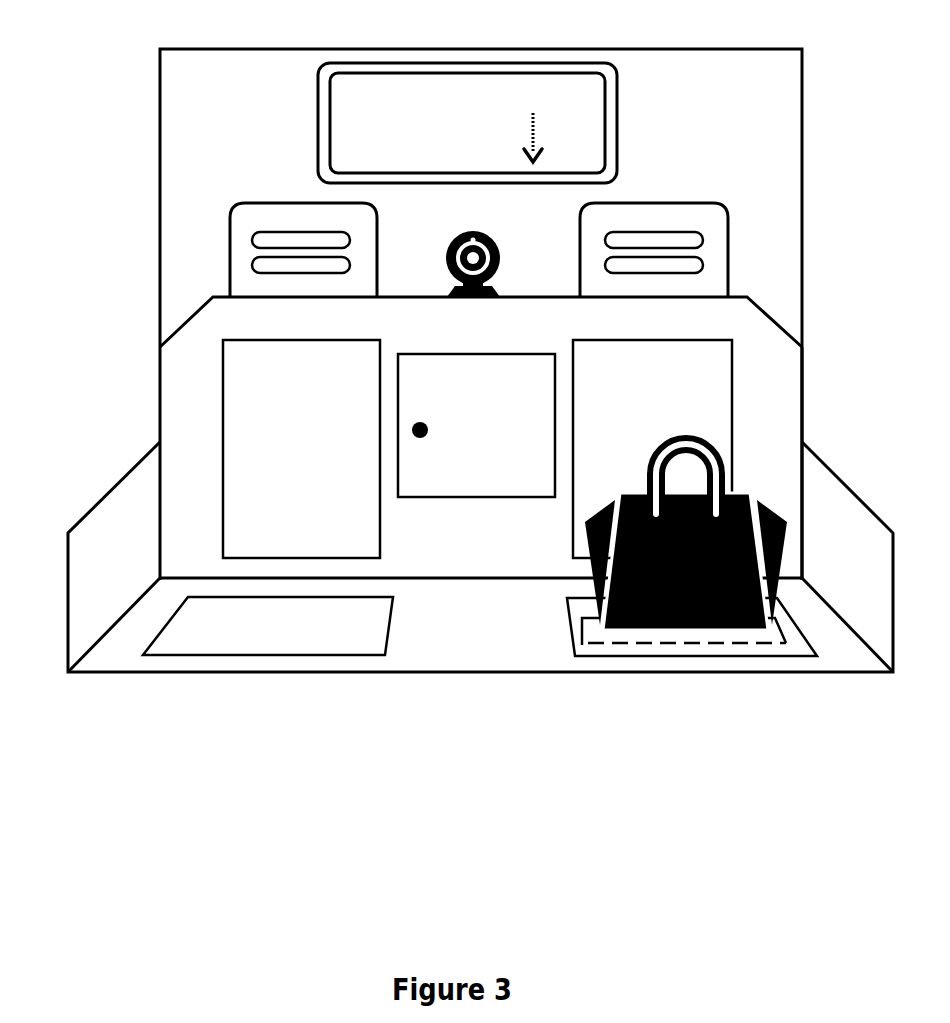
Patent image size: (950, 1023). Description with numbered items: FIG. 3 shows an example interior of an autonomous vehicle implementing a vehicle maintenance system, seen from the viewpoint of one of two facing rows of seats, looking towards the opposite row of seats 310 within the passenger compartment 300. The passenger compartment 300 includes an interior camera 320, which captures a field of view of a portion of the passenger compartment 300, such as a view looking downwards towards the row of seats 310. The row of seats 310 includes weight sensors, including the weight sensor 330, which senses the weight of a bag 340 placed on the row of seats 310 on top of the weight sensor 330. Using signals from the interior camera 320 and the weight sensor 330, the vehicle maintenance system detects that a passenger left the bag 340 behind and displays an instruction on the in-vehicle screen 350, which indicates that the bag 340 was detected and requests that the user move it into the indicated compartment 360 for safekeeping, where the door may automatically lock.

The passenger compartment 300 is at (72, 162).
The row of seats 310 is at (783, 385).
The interior camera 320 is at (458, 230).
The weight sensor 330 is at (593, 638).
The bag 340 is at (585, 568).
The in-vehicle screen 350 is at (617, 118).
The compartment 360 is at (467, 492).